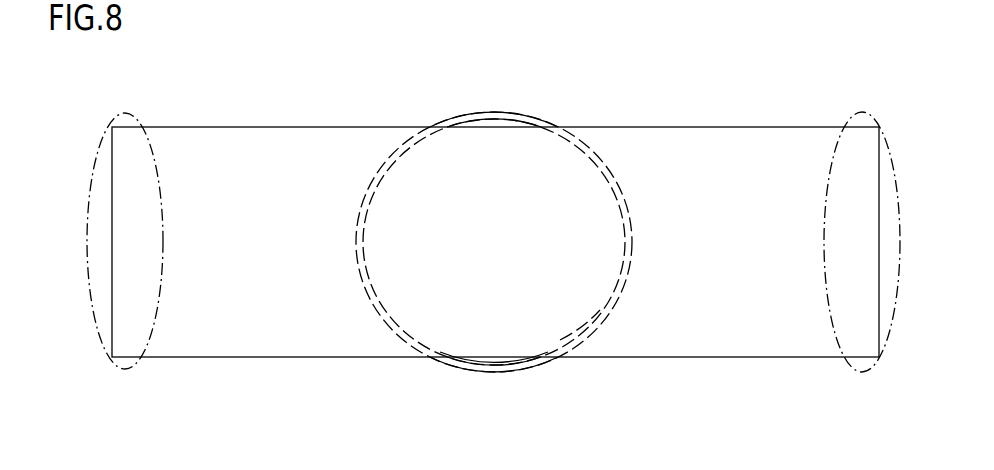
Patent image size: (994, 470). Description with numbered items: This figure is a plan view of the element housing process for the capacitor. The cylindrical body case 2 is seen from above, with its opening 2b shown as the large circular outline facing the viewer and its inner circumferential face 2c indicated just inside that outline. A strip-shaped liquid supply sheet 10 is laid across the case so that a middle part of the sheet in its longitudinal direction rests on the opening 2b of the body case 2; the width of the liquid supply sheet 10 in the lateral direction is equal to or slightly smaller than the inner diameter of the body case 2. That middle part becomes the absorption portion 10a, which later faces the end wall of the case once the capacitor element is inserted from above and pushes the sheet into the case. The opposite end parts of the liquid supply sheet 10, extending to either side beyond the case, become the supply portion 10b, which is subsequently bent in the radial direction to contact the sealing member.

The body case 2 is at (525, 113).
The opening 2b is at (488, 363).
The inner circumferential face 2c is at (367, 230).
The liquid supply sheet 10 is at (675, 127).
The absorption portion 10a is at (550, 335).
The supply portion 10b is at (147, 337).